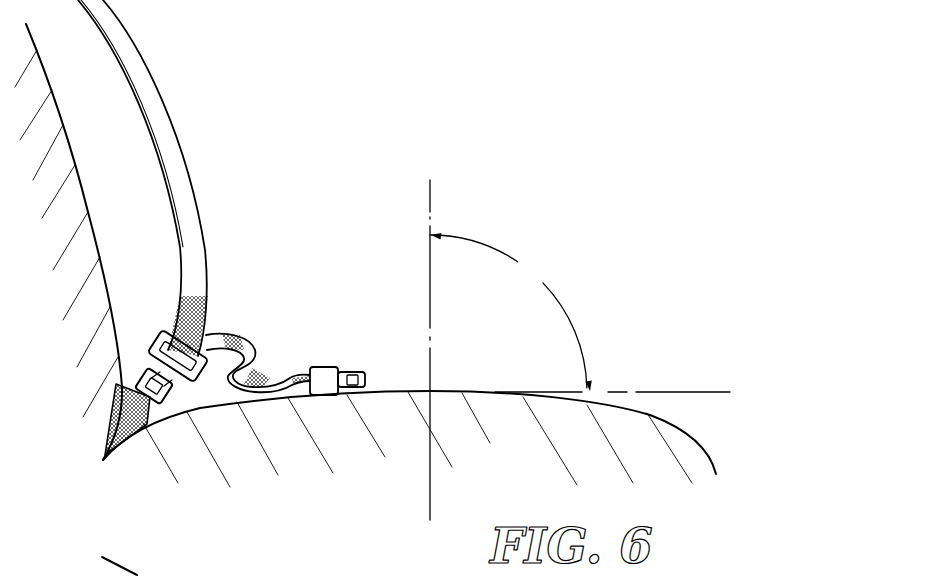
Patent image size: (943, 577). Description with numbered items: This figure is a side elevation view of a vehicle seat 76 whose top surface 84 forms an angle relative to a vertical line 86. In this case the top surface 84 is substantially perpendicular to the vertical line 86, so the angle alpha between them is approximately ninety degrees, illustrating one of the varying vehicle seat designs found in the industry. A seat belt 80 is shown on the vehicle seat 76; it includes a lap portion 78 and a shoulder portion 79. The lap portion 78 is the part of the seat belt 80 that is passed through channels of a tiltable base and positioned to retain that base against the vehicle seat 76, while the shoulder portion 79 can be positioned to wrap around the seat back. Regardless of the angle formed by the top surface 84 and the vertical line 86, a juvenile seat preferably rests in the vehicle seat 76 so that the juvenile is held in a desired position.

The vehicle seat 76 is at (545, 472).
The lap portion 78 is at (258, 344).
The shoulder portion 79 is at (179, 162).
The seat belt 80 is at (238, 248).
The top surface 84 is at (467, 392).
The vertical line 86 is at (431, 190).